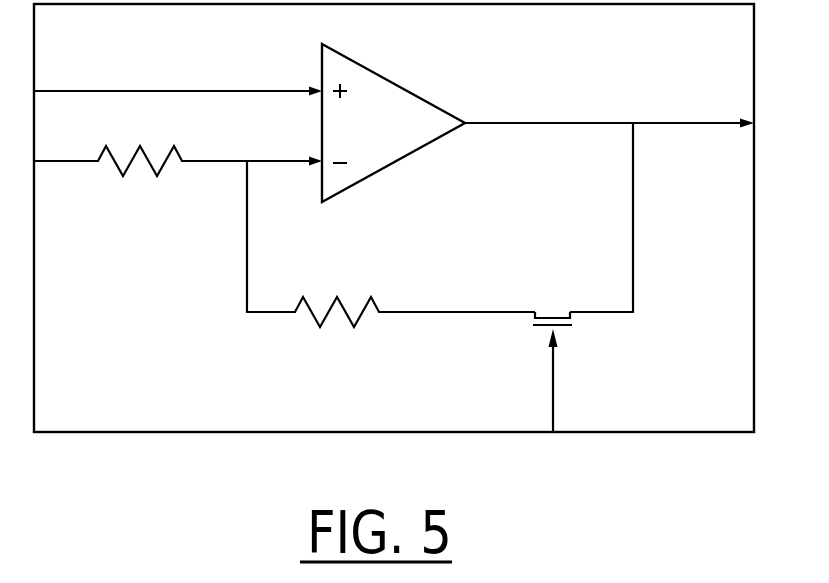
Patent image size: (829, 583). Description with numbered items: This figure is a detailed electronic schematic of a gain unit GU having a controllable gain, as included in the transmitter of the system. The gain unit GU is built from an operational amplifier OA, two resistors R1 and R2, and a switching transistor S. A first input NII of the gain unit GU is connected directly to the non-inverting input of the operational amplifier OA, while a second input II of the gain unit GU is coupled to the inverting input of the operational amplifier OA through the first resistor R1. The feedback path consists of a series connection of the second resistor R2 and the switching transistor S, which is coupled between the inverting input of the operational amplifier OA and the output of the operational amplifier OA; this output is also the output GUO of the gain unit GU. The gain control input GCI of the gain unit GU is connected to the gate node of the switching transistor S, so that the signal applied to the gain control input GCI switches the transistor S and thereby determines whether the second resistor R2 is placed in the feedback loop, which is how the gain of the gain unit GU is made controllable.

The gain unit GU is at (394, 218).
The first input NII is at (178, 80).
The second input II is at (62, 148).
The first resistor R1 is at (140, 171).
The second resistor R2 is at (337, 320).
The operational amplifier OA is at (393, 123).
The output of the gain unit GUO is at (609, 111).
The switching transistor S is at (543, 328).
The gain control input GCI is at (571, 380).